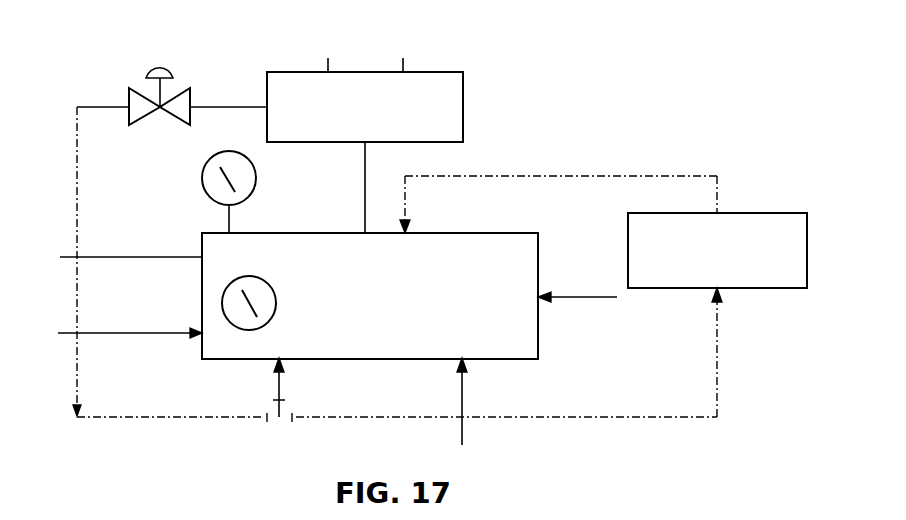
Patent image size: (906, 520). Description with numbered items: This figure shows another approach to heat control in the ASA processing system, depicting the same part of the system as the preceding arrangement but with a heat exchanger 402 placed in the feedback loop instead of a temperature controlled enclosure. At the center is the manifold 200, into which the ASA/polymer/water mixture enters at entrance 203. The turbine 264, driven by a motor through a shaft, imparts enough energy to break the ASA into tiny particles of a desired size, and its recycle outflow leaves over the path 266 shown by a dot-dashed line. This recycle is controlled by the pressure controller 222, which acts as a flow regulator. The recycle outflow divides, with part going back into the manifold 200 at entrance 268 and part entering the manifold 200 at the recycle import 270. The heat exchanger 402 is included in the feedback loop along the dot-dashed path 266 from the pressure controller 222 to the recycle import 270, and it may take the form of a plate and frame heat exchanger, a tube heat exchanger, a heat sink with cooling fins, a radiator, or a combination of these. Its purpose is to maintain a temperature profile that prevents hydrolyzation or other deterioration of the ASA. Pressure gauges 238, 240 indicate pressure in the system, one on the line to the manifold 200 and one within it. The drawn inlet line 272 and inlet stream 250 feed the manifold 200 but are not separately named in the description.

The pressure controller 222 is at (158, 65).
The turbine 264 is at (413, 72).
The entrance 203 is at (365, 178).
The pressure gauge 238 is at (202, 178).
The inlet line 272 is at (172, 255).
The manifold 200 is at (388, 285).
The pressure gauge 240 is at (277, 303).
The entrance 270 is at (406, 193).
The heat exchanger 402 is at (735, 213).
The path 266 is at (720, 367).
The entrance 268 is at (282, 375).
The inlet stream 250 is at (465, 378).